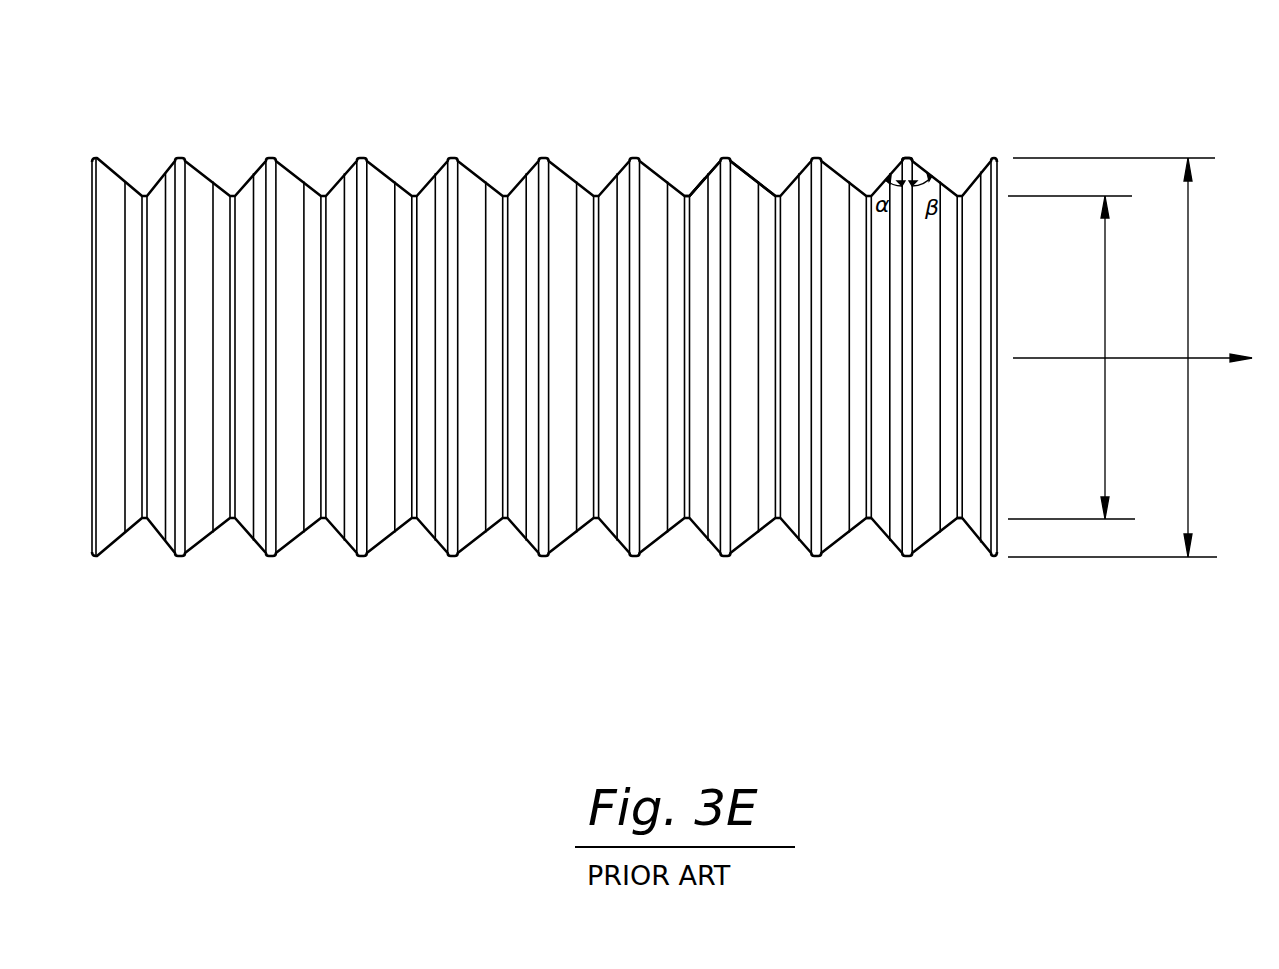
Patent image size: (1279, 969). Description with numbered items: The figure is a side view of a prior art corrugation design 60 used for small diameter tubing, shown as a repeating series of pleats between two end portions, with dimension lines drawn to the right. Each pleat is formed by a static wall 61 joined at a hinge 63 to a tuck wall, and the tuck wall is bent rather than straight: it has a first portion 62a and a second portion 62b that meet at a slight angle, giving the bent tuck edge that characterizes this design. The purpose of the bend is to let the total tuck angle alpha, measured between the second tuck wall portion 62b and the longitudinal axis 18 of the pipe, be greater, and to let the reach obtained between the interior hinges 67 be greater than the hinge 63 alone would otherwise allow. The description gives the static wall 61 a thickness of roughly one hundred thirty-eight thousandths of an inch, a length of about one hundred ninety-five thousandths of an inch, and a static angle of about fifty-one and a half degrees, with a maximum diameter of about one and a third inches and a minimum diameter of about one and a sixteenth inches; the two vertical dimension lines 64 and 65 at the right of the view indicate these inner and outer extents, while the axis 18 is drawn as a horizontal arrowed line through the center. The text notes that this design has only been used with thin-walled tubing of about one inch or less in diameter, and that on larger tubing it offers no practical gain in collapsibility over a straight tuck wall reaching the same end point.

The corrugation design 60 is at (1003, 111).
The static wall 61 is at (748, 172).
The first portion of tuck wall 62a is at (716, 166).
The second portion of tuck wall 62b is at (698, 185).
The hinge 63 is at (906, 157).
The inner height dimension 64 is at (1106, 446).
The outer height dimension 65 is at (1189, 450).
The interior hinges 67 is at (962, 520).
The longitudinal axis 18 is at (1080, 357).